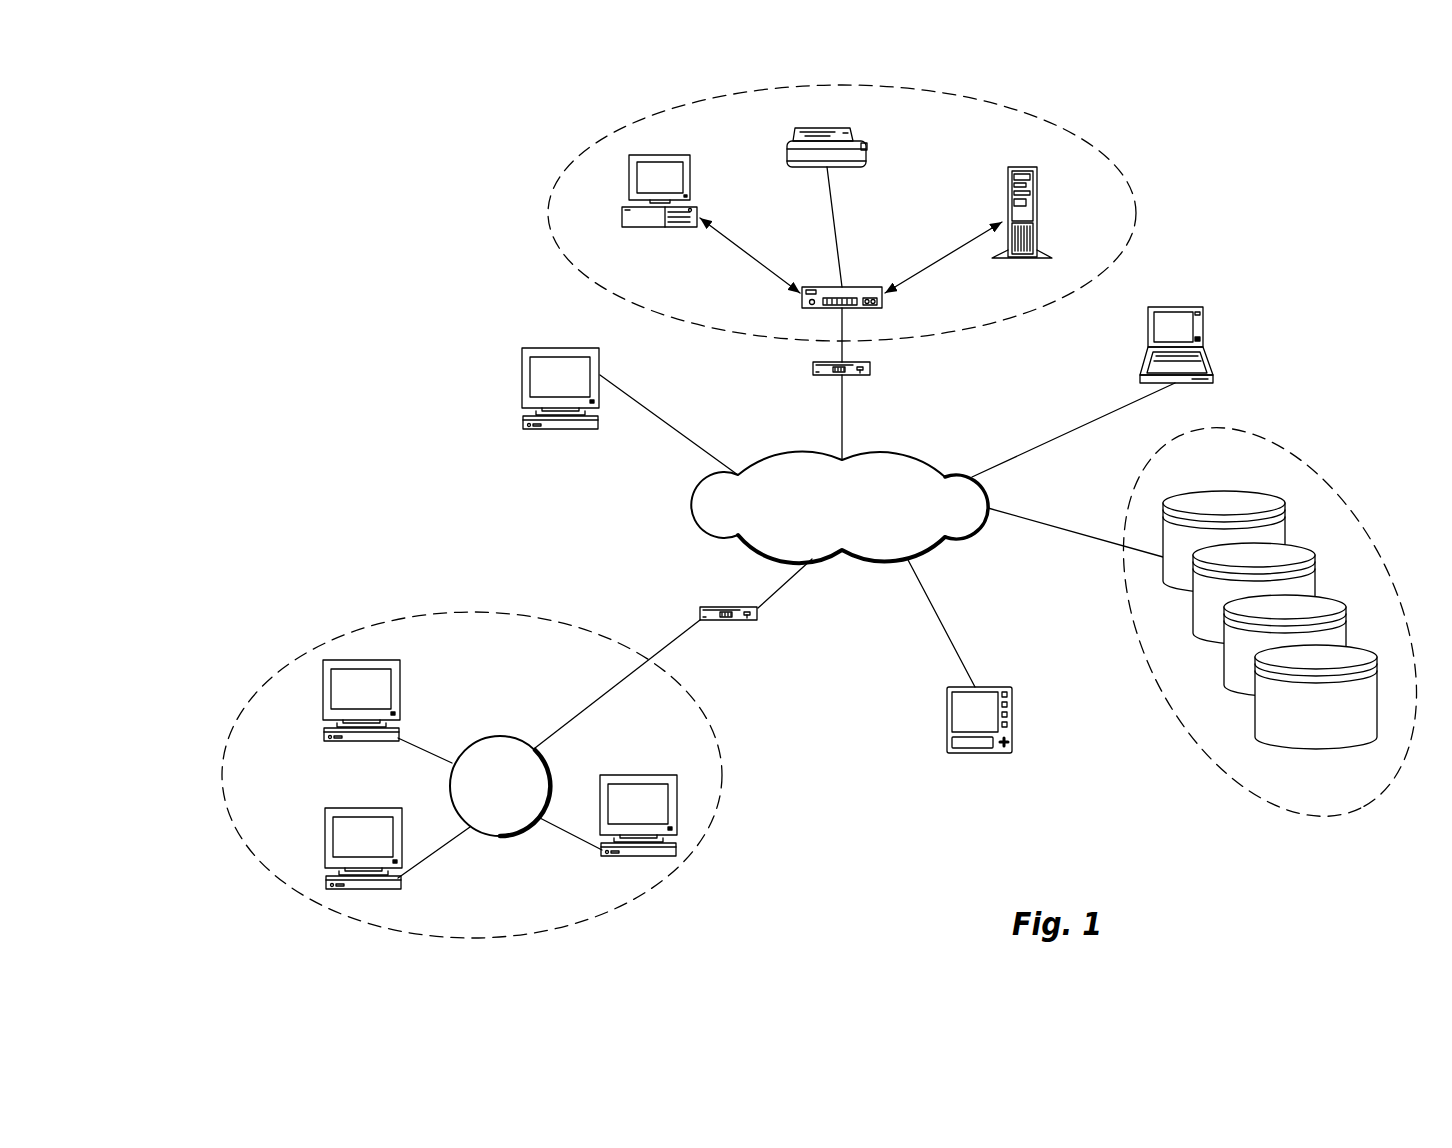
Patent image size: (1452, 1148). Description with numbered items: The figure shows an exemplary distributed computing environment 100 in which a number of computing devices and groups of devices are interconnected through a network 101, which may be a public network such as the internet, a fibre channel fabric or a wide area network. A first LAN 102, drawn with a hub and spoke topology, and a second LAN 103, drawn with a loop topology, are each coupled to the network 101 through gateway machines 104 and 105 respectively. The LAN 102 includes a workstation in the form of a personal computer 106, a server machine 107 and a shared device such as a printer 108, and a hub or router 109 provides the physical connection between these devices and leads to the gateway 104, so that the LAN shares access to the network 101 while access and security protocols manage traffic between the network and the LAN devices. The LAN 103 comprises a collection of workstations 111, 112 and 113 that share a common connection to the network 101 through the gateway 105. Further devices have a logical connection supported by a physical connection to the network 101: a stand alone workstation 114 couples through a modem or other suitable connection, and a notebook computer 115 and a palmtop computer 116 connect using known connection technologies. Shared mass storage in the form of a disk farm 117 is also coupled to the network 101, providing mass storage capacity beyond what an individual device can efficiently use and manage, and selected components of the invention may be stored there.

The computing environment 100 is at (408, 210).
The network 101 is at (692, 506).
The LAN 102 is at (577, 162).
The LAN 103 is at (300, 653).
The gateway machine 104 is at (822, 377).
The gateway machine 105 is at (723, 605).
The personal computer 106 is at (670, 155).
The server machine 107 is at (1020, 167).
The printer 108 is at (835, 128).
The hub or router 109 is at (854, 287).
The workstation 111 is at (383, 660).
The workstation 112 is at (348, 808).
The workstation 113 is at (653, 775).
The stand alone workstation 114 is at (535, 348).
The notebook computer 115 is at (1188, 307).
The palmtop computer 116 is at (997, 687).
The disk farm 117 is at (1298, 477).